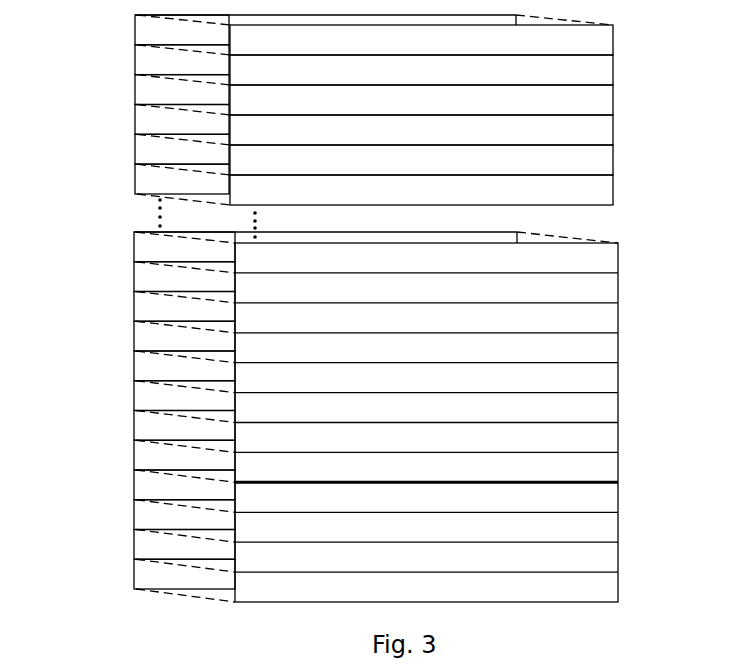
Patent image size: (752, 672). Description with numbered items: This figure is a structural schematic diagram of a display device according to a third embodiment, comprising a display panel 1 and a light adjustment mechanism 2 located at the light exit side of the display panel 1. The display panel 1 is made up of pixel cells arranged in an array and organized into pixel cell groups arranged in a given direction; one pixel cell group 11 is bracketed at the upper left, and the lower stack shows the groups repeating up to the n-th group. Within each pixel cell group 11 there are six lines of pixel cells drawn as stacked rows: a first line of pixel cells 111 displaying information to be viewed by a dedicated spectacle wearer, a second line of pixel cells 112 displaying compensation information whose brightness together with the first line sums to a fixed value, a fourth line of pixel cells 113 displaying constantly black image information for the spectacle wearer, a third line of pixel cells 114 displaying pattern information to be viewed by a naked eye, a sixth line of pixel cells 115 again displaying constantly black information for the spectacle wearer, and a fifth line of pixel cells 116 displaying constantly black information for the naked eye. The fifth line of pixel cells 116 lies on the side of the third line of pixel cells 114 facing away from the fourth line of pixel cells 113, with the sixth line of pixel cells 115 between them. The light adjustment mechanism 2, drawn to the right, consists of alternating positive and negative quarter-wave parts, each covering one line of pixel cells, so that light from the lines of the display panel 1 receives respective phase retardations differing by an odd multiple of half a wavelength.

The display panel 1 is at (143, 359).
The light adjustment mechanism 2 is at (425, 110).
The pixel cell group 11 is at (120, 110).
The first line of pixel cells 111 is at (135, 31).
The second line of pixel cells 112 is at (135, 61).
The fourth line of pixel cells 113 is at (135, 91).
The third line of pixel cells 114 is at (135, 120).
The sixth line of pixel cells 115 is at (135, 150).
The fifth line of pixel cells 116 is at (143, 179).